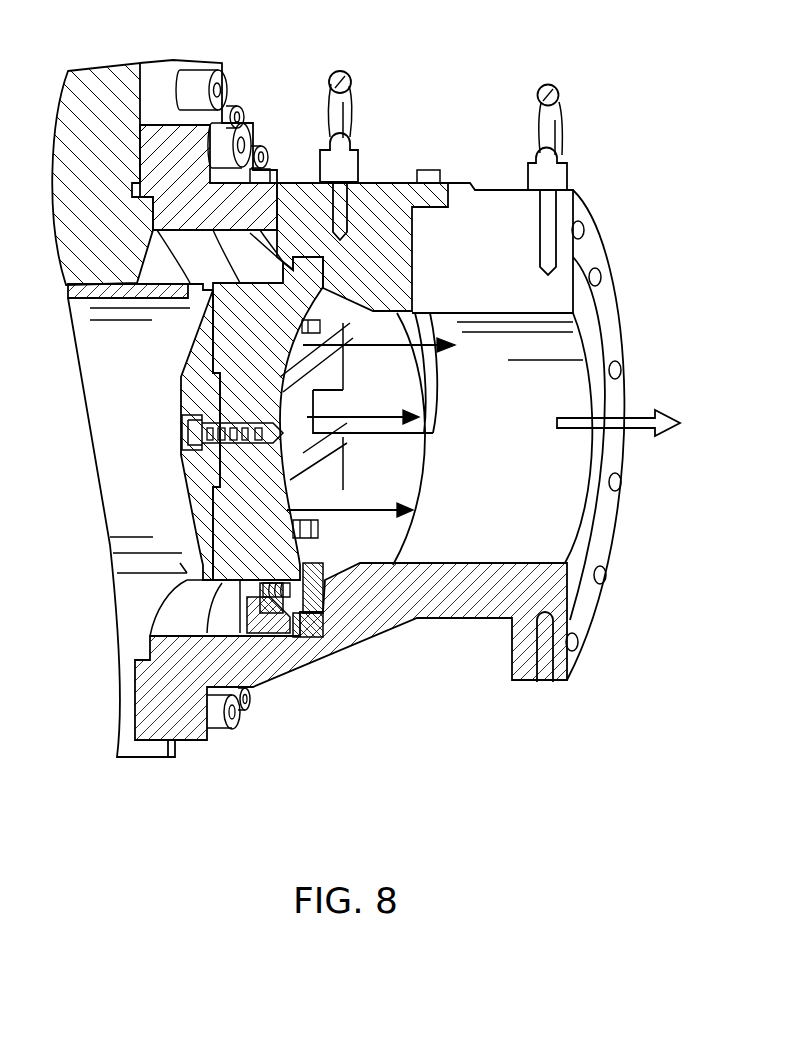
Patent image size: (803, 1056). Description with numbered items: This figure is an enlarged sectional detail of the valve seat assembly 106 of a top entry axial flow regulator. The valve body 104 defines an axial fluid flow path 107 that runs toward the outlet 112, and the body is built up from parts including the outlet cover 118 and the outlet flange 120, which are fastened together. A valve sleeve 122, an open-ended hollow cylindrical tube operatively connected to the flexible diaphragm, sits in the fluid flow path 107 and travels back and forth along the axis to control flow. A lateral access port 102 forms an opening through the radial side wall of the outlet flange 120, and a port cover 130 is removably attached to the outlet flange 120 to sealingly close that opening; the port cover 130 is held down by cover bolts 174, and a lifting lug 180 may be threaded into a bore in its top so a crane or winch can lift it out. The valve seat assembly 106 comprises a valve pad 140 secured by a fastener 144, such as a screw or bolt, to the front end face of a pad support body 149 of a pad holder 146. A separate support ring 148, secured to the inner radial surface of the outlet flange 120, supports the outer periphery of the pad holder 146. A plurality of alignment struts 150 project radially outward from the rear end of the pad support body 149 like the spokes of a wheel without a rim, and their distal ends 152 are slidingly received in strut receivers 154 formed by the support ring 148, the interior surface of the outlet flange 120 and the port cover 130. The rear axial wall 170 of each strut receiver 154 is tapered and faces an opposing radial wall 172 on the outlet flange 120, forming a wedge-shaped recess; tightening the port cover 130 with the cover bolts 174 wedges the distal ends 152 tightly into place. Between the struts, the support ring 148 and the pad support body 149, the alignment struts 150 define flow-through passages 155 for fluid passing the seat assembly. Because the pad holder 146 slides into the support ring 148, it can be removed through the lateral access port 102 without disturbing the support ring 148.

The lateral access port 102 is at (418, 248).
The valve body 104 is at (127, 772).
The valve seat assembly 106 is at (165, 459).
The axial fluid flow path 107 is at (635, 432).
The outlet 112 is at (587, 343).
The outlet cover 118 is at (107, 85).
The outlet flange 120 is at (503, 190).
The valve sleeve 122 is at (92, 297).
The port cover 130 is at (397, 182).
The valve pad 140 is at (200, 387).
The fastener 144 is at (182, 420).
The pad holder 146 is at (210, 508).
The support ring 148 is at (270, 610).
The pad support body 149 is at (240, 550).
The alignment struts 150 is at (330, 503).
The distal ends 152 is at (310, 585).
The strut receivers 154 is at (318, 256).
The flow-through passages 155 is at (380, 346).
The rear axial wall 170 is at (270, 690).
The radial wall 172 is at (310, 567).
The cover bolts 174 is at (272, 168).
The lifting lug 180 is at (340, 78).